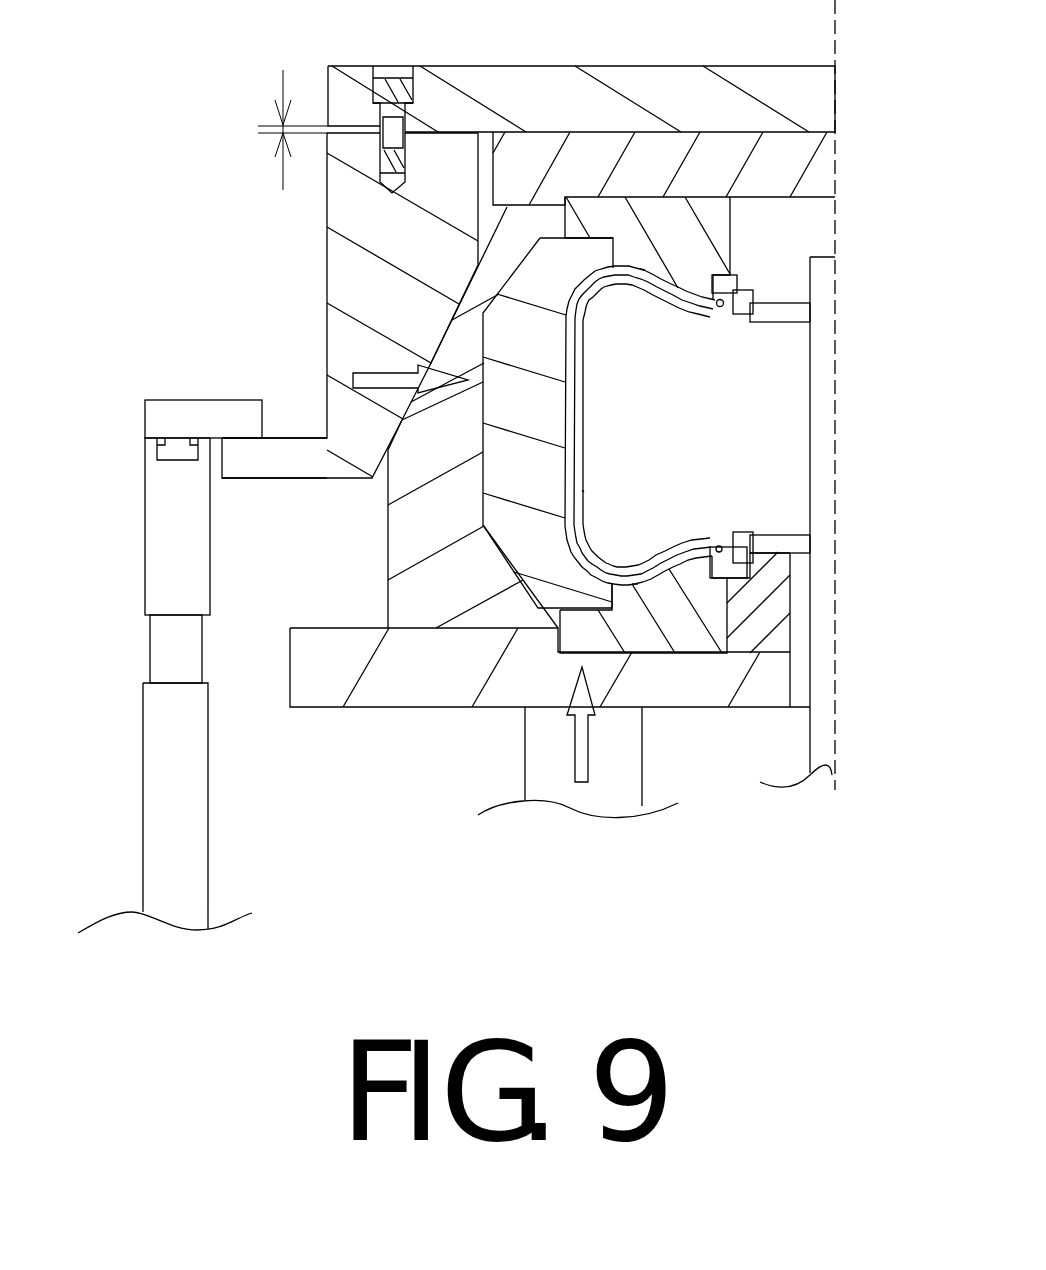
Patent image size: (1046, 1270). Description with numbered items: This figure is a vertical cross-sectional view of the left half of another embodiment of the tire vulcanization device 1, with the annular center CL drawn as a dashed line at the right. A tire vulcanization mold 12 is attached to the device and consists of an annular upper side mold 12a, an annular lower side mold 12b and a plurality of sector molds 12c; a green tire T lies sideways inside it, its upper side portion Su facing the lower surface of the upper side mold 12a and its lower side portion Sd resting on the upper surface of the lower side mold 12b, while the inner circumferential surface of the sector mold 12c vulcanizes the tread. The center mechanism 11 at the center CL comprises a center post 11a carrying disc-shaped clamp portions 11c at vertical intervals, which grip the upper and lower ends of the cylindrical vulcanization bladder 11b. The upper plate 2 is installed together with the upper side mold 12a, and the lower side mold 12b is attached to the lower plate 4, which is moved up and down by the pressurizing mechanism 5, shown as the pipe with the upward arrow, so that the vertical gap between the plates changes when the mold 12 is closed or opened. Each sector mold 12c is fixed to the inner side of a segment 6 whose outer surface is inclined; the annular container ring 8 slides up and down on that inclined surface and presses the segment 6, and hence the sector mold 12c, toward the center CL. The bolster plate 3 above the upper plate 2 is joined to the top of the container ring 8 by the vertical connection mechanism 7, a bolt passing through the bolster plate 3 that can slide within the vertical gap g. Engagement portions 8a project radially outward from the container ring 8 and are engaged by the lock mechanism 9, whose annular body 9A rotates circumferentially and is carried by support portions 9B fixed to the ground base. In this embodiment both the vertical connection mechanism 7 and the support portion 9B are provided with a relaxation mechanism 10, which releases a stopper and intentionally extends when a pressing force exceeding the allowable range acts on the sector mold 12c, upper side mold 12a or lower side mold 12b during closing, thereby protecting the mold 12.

The tire vulcanization device 1 is at (224, 188).
The upper plate 2 is at (828, 172).
The bolster plate 3 is at (768, 82).
The lower plate 4 is at (370, 700).
The pressurizing mechanism 5 is at (545, 768).
The segment 6 is at (395, 548).
The vertical connection mechanism 7 is at (418, 94).
The container ring 8 is at (338, 292).
The engagement portion 8a is at (292, 442).
The lock mechanism 9 is at (187, 383).
The annular body 9A is at (242, 400).
The support portion 9B is at (190, 845).
The relaxation mechanism 10 is at (387, 125).
The center mechanism 11 is at (834, 313).
The center post 11a is at (822, 448).
The vulcanization bladder 11b is at (586, 492).
The clamp portion 11c is at (762, 322).
The tire vulcanization mold 12 is at (464, 341).
The upper side mold 12a is at (722, 232).
The lower side mold 12b is at (690, 660).
The sector mold 12c is at (567, 340).
The green tire T is at (578, 428).
The upper side portion Su is at (632, 280).
The lower side portion Sd is at (640, 572).
The vertical gap g is at (284, 130).
The annular center CL is at (831, 414).